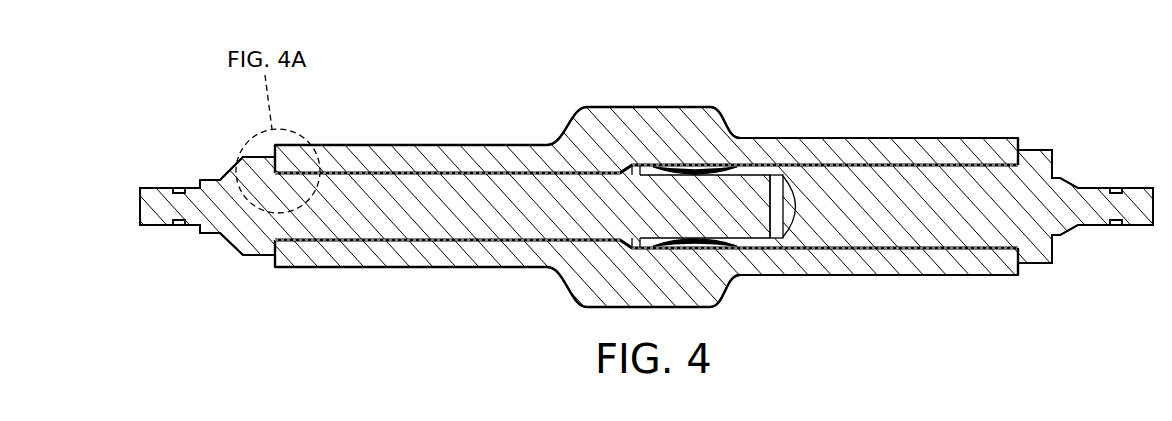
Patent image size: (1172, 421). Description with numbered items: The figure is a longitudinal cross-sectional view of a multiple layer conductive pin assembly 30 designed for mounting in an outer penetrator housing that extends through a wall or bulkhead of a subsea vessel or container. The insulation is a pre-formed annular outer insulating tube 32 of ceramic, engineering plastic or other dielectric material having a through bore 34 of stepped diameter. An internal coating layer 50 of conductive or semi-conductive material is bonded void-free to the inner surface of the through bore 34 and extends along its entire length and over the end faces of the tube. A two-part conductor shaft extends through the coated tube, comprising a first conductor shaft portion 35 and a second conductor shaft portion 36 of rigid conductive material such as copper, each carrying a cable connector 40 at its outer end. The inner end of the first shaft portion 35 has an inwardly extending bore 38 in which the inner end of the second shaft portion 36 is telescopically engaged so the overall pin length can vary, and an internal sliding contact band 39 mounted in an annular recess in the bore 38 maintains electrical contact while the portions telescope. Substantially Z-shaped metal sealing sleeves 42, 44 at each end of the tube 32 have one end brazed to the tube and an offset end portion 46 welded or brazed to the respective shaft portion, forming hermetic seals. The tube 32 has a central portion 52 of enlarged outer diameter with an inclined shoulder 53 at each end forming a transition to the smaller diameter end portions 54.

The multiple layer conductive pin assembly 30 is at (887, 102).
The outer insulating tube 32 is at (647, 135).
The through bore 34 is at (988, 164).
The first conductor shaft portion 35 is at (935, 200).
The second conductor shaft portion 36 is at (363, 208).
The inwardly extending bore 38 is at (783, 177).
The internal sliding contact band 39 is at (698, 173).
The cable connector 40 is at (162, 205).
The metal sealing sleeve 42 is at (1037, 149).
The metal sealing sleeve 44 is at (260, 256).
The offset end portion 46 is at (1033, 266).
The internal coating layer 50 is at (367, 242).
The central portion 52 is at (607, 107).
The inclined shoulder 53 is at (563, 125).
The end portion 54 is at (444, 145).